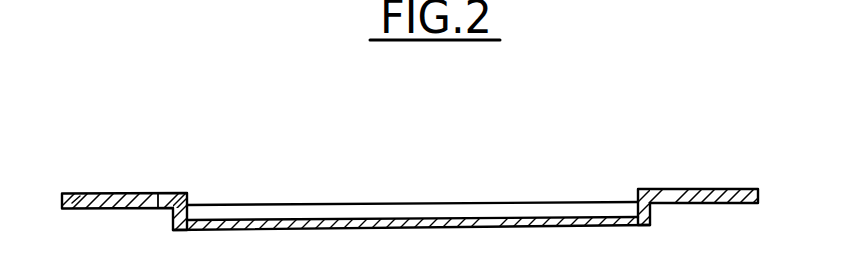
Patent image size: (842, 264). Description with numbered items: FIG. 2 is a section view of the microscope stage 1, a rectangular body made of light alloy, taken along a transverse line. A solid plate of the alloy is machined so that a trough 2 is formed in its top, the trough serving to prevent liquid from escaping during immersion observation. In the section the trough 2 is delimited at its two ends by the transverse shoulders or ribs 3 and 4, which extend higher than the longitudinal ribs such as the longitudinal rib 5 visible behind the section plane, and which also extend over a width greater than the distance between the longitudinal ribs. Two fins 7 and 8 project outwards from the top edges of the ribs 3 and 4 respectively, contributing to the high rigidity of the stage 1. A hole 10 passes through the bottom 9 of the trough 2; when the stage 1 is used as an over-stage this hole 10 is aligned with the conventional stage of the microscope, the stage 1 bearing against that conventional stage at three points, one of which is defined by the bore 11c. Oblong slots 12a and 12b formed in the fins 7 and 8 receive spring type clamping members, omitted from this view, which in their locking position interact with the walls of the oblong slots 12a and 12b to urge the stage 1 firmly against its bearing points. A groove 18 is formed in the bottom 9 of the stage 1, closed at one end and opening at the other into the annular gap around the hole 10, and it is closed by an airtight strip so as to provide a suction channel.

The stage 1 is at (392, 101).
The trough 2 is at (393, 200).
The transverse rib 3 is at (188, 196).
The transverse rib 4 is at (638, 190).
The longitudinal rib 5 is at (273, 209).
The fin 7 is at (117, 209).
The fin 8 is at (715, 203).
The bottom of the trough 9 is at (593, 228).
The hole 10 is at (485, 240).
The bearing point bore 11c is at (87, 209).
The oblong slot 12a is at (158, 194).
The oblong slot 12b is at (665, 194).
The groove 18 is at (431, 228).